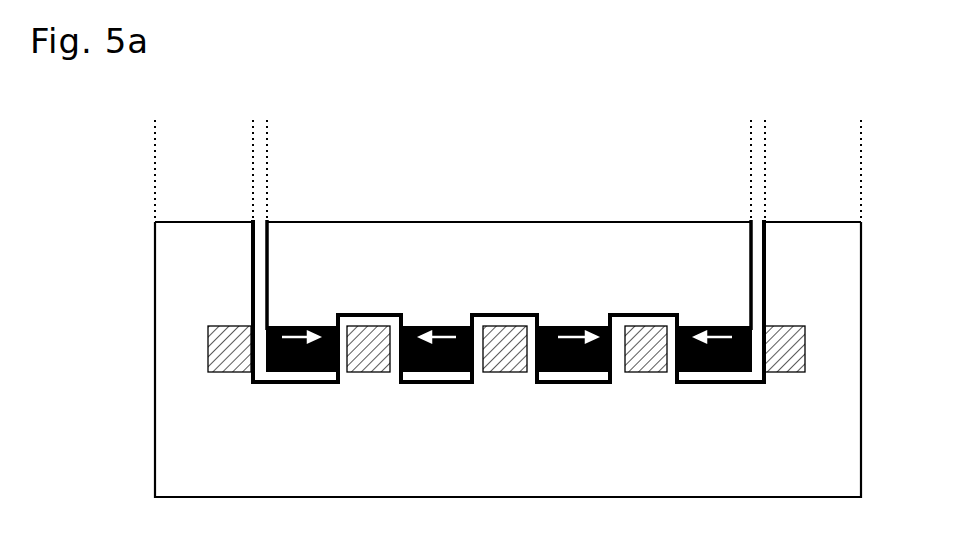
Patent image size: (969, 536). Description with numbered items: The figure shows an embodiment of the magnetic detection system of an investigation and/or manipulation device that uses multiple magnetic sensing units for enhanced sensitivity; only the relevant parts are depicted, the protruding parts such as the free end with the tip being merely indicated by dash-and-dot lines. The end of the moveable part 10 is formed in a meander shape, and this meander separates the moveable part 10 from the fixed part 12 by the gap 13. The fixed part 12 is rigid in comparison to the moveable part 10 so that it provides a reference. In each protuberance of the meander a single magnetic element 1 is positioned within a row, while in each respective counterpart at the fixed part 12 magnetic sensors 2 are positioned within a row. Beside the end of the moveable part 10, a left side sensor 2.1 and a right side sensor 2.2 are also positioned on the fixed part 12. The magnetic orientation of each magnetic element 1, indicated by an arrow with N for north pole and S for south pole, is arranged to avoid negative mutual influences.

The magnetic element 1 is at (296, 325).
The magnetic sensor 2 is at (363, 374).
The left side sensor 2.1 is at (227, 374).
The right side sensor 2.2 is at (783, 374).
The moveable part 10 is at (505, 245).
The fixed part 12 is at (166, 405).
The gap 13 is at (260, 120).